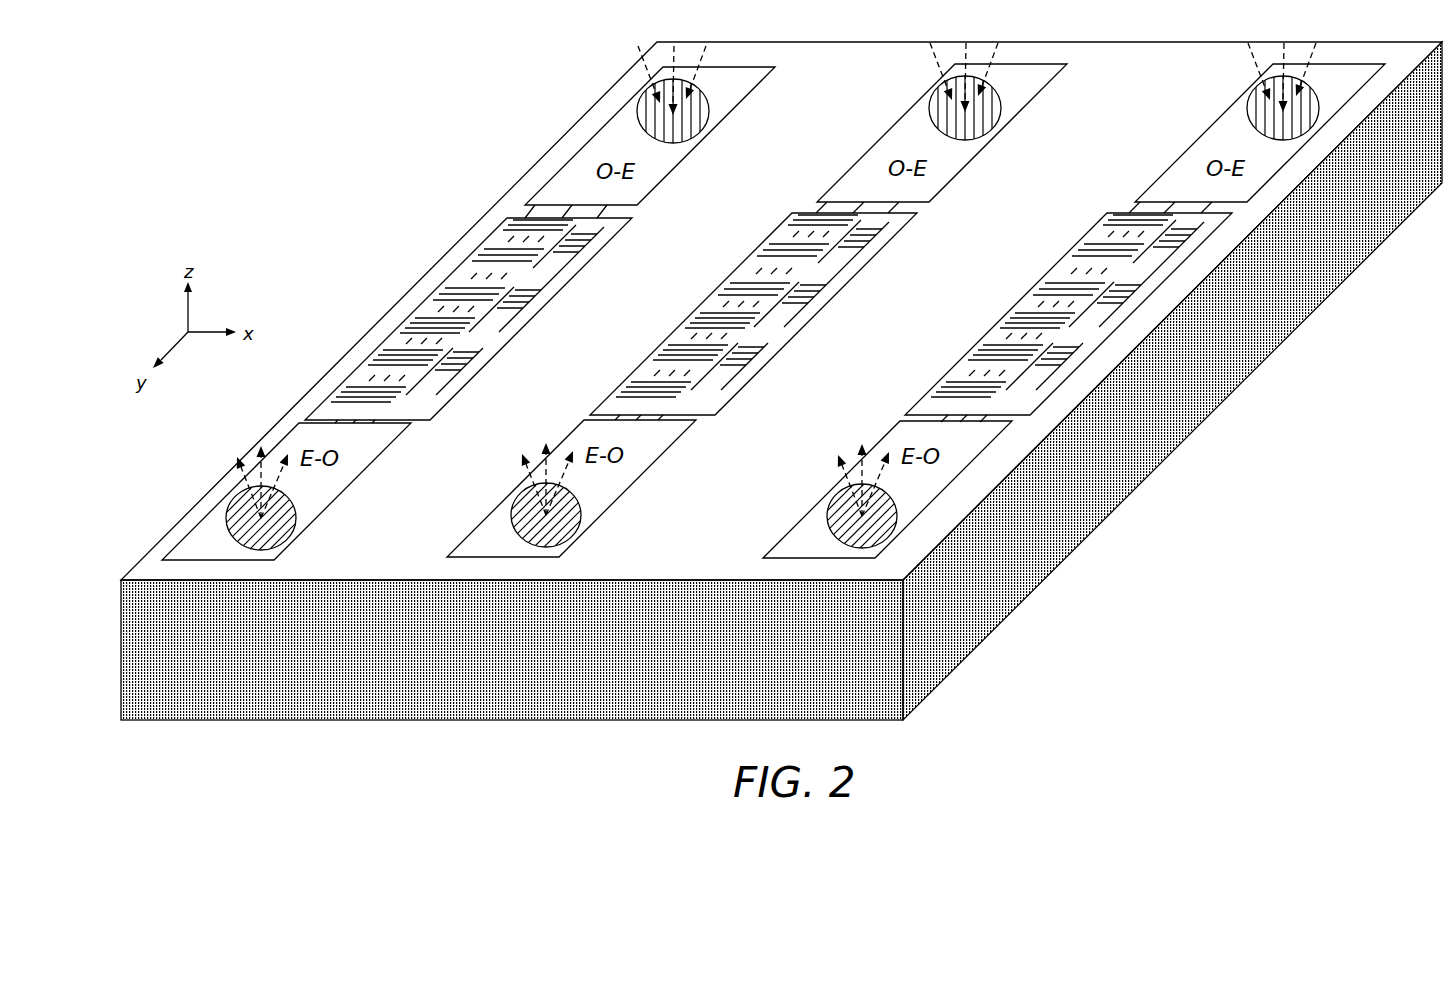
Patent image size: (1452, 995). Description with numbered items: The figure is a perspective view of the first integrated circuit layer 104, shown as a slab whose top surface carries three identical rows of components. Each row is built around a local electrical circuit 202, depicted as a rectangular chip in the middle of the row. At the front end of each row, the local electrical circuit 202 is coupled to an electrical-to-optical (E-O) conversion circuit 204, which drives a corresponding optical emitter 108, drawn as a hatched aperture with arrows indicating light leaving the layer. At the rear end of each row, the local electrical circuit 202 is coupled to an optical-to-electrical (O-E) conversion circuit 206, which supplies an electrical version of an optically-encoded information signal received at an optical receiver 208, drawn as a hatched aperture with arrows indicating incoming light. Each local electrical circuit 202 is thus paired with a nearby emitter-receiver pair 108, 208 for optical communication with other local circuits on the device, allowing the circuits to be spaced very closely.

The first integrated circuit layer 104 is at (321, 151).
The optical emitter 108 is at (297, 499).
The local electrical circuit 202 is at (837, 278).
The electrical-to-optical (E-O) conversion circuit 204 is at (642, 453).
The optical-to-electrical (O-E) conversion circuit 206 is at (957, 122).
The optical receiver 208 is at (995, 88).